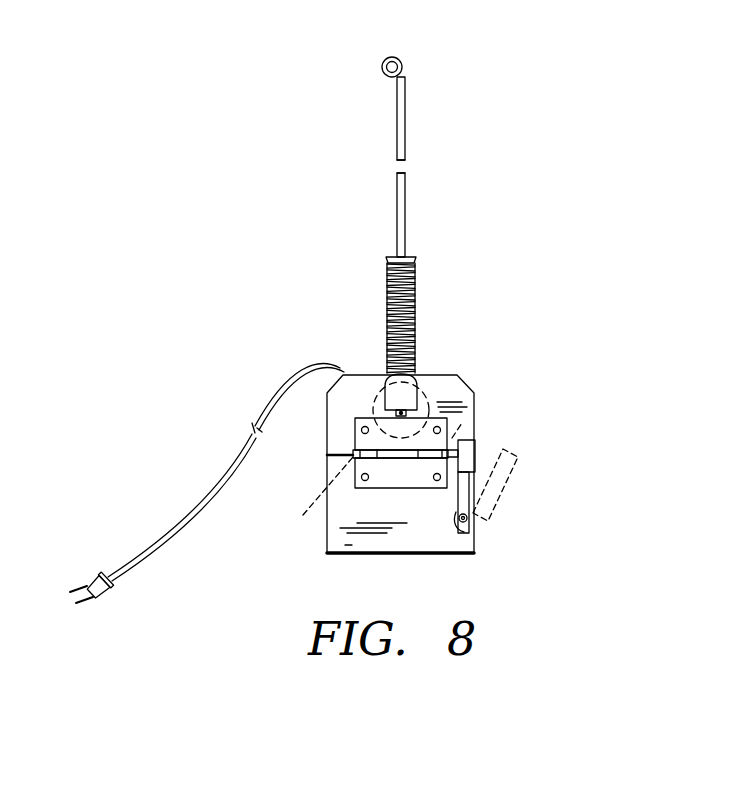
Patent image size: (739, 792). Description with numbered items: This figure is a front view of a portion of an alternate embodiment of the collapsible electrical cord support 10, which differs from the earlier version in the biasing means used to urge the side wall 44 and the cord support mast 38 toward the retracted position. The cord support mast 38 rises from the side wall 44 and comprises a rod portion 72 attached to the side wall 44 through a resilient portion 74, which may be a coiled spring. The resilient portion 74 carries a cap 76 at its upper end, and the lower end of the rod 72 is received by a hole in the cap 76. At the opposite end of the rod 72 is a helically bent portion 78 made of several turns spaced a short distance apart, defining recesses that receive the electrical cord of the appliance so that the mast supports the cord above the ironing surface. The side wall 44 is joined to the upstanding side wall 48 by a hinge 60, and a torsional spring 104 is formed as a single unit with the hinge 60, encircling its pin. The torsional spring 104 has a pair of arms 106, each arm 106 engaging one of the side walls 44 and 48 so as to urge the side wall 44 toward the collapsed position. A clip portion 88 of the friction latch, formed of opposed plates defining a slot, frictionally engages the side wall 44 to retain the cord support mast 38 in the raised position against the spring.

The collapsible electrical cord support 10 is at (468, 363).
The cord support mast 38 is at (425, 183).
The side wall 44 is at (343, 402).
The upstanding side wall 48 is at (342, 513).
The hinge 60 is at (413, 478).
The rod portion 72 is at (405, 138).
The resilient portion 74 is at (408, 298).
The cap 76 is at (410, 256).
The helically bent portion 78 is at (402, 66).
The clip portion 88 is at (467, 456).
The torsional spring 104 is at (340, 457).
The arms 106 is at (327, 493).